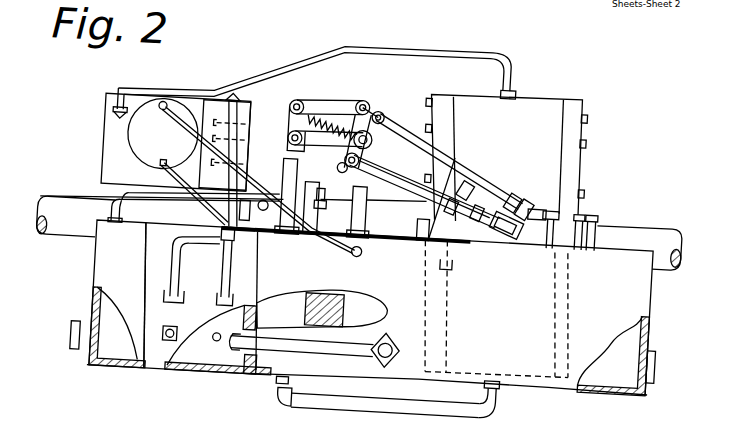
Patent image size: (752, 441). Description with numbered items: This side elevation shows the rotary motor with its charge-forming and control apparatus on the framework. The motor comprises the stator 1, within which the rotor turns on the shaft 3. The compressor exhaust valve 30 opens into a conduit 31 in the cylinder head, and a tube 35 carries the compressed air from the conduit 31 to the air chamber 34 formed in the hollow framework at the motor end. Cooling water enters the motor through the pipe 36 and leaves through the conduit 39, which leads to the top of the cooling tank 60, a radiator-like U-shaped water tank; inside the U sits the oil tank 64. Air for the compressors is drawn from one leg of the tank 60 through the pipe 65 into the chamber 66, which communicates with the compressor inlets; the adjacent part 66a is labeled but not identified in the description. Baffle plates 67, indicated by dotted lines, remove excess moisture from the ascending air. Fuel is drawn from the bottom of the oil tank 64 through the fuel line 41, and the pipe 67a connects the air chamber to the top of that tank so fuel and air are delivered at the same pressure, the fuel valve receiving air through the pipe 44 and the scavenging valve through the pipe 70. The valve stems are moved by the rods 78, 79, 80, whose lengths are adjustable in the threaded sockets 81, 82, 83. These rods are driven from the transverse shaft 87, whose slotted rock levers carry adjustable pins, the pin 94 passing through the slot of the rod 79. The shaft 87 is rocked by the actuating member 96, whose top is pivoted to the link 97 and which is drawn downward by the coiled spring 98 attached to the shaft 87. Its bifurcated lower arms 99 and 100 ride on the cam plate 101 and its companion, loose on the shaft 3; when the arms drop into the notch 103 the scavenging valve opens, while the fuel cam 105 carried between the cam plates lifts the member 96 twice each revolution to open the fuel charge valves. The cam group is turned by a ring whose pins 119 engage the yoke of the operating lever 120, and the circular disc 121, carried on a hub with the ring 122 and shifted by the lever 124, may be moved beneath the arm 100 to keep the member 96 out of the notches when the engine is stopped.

The stator 1 is at (505, 159).
The shaft 3 is at (356, 216).
The exhaust valve 30 is at (202, 335).
The conduit 31 is at (217, 383).
The air chamber 34 is at (617, 354).
The tube or conduit 35 is at (314, 349).
The pipe or conduit 36 is at (387, 404).
The conduit 39 is at (316, 74).
The fuel line 41 is at (496, 309).
The air line 44 is at (520, 248).
The cooling tank 60 is at (176, 142).
The oil tank 64 is at (163, 134).
The pipe 65 is at (236, 267).
The chamber 66 is at (109, 327).
The partition 66a is at (132, 294).
The baffle plates 67 is at (239, 160).
The pipe 67a is at (257, 194).
The pipe 70 is at (575, 219).
The rod 78 is at (454, 162).
The rod 79 is at (388, 213).
The rod 80 is at (436, 197).
The socket 81 is at (475, 171).
The socket 82 is at (431, 215).
The socket 83 is at (460, 202).
The shaft 87 is at (368, 163).
The pin 94 is at (370, 142).
The actuating member 96 is at (307, 130).
The link 97 is at (326, 97).
The coiled spring 98 is at (369, 99).
The arm 99 is at (277, 190).
The arm 100 is at (340, 155).
The cam plate 101 is at (285, 196).
The notch 103 is at (335, 169).
The fuel or gas cam 105 is at (309, 139).
The pins 119 is at (264, 192).
The operating lever 120 is at (232, 210).
The circular disc 121 is at (332, 193).
The ring 122 is at (335, 205).
The lever 124 is at (348, 258).